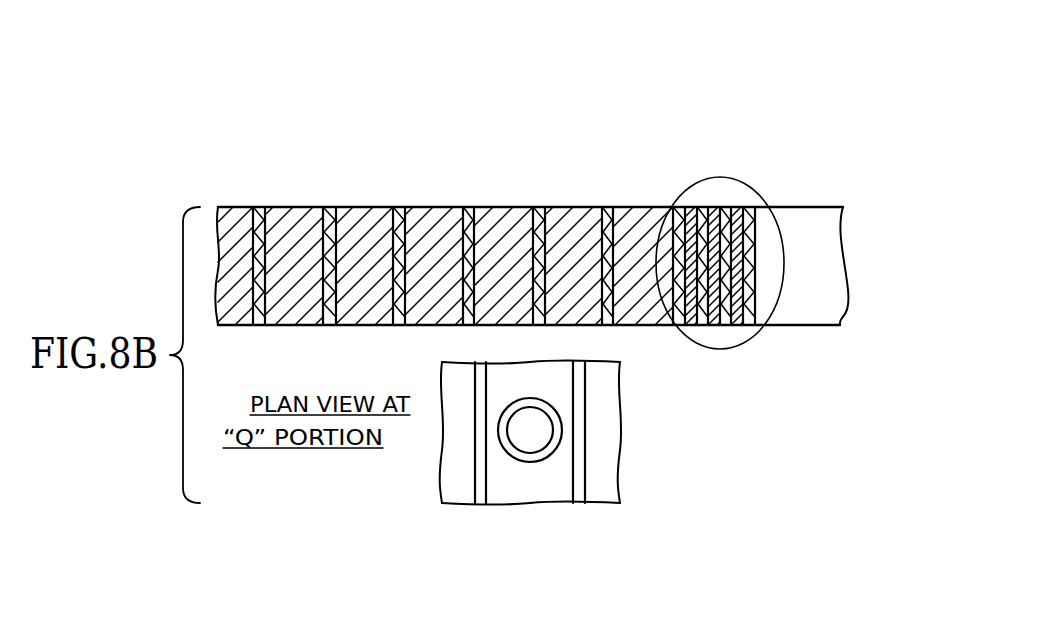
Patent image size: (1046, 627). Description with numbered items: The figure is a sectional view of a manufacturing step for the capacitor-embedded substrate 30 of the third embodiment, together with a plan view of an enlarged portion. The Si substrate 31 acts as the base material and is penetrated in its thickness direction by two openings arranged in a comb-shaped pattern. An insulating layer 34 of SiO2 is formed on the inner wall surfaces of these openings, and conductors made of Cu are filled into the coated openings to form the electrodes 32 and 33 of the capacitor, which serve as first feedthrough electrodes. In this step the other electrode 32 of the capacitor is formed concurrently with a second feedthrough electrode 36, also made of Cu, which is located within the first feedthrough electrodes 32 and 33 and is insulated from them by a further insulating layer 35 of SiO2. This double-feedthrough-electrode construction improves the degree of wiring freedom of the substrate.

The capacitor-embedded substrate 30 is at (848, 94).
The Si substrate 31 is at (823, 263).
The electrode 32 is at (510, 210).
The electrode 33 is at (578, 210).
The insulating layer 34 is at (682, 214).
The insulating layer 35 is at (700, 225).
The second feedthrough electrode 36 is at (716, 222).